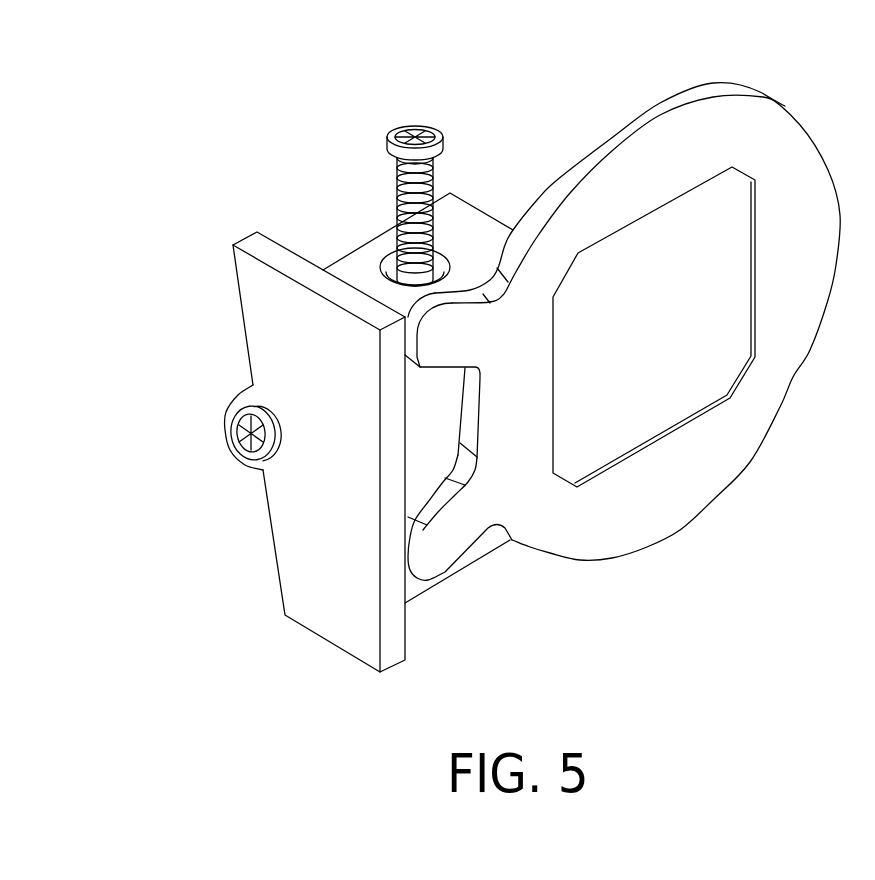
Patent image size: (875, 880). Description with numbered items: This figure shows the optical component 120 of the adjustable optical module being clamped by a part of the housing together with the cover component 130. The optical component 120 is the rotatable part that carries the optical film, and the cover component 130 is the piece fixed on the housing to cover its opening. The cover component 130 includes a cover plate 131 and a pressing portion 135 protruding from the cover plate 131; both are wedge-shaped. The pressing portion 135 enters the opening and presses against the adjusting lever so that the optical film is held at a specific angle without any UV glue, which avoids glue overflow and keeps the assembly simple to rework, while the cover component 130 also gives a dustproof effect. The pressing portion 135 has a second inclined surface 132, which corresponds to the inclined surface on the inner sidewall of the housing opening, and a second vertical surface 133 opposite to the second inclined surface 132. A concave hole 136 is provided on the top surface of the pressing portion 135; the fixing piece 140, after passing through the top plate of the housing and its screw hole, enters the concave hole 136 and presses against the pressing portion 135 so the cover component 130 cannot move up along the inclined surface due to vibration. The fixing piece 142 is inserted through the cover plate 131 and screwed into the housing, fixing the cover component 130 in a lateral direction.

The optical component 120 is at (645, 117).
The cover component 130 is at (237, 110).
The cover plate 131 is at (327, 618).
The second inclined surface 132 is at (340, 260).
The second vertical surface 133 is at (480, 550).
The pressing portion 135 is at (477, 220).
The concave hole 136 is at (392, 262).
The fixing piece 140 is at (419, 130).
The fixing piece 142 is at (236, 438).